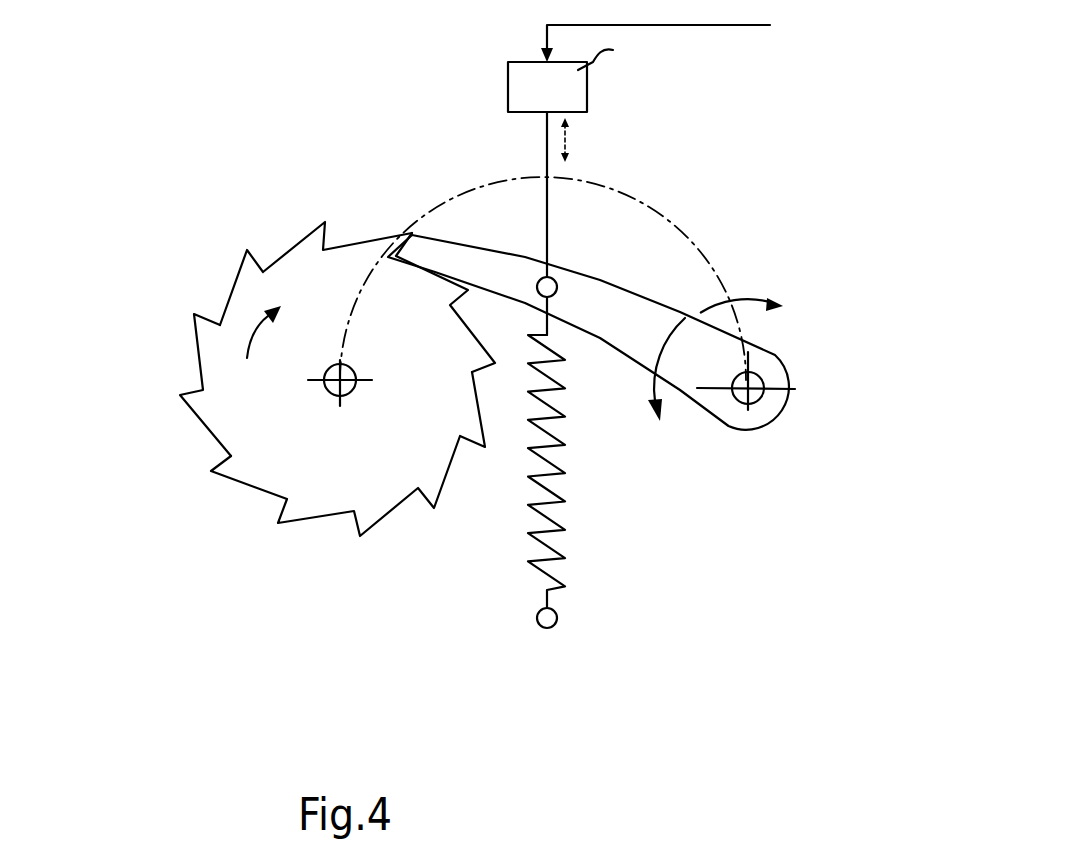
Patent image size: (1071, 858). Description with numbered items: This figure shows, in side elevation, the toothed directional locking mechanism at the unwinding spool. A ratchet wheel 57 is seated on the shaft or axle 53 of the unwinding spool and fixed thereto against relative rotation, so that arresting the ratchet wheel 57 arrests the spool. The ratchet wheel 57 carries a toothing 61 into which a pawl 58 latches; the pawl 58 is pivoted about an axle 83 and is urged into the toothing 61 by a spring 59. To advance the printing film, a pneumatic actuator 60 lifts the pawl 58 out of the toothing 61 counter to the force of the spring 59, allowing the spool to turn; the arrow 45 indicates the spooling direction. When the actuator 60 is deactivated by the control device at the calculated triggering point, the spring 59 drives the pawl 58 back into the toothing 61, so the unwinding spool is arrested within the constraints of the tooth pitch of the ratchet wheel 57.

The arrow 45 is at (310, 362).
The shaft or axle 53 is at (330, 392).
The ratchet wheel 57 is at (315, 487).
The toothing 61 is at (325, 236).
The pawl 58 is at (627, 288).
The axle 83 is at (767, 378).
The pneumatic actuator 60 is at (573, 88).
The spring 59 is at (557, 523).